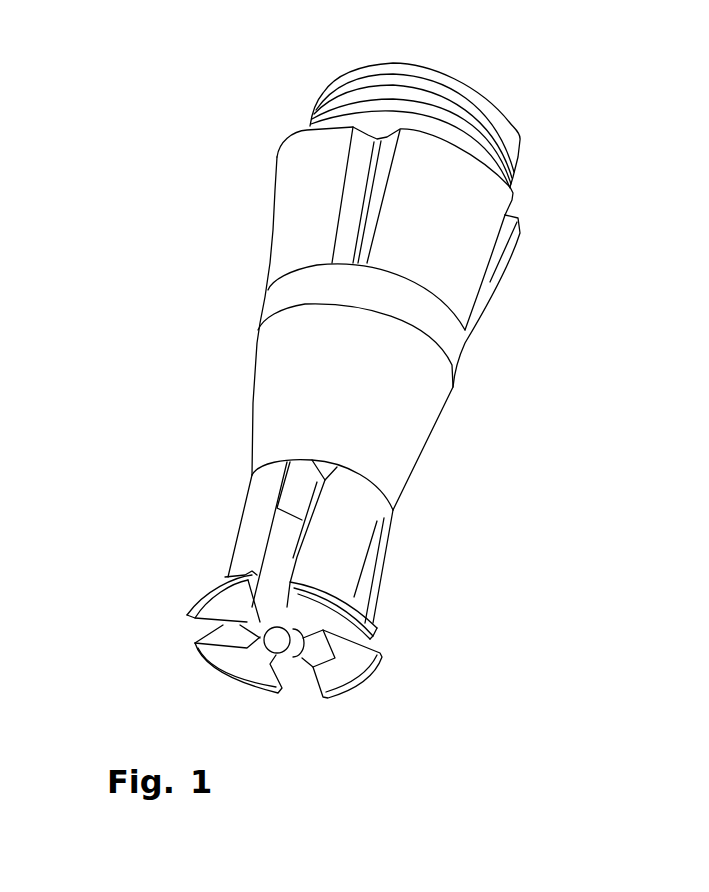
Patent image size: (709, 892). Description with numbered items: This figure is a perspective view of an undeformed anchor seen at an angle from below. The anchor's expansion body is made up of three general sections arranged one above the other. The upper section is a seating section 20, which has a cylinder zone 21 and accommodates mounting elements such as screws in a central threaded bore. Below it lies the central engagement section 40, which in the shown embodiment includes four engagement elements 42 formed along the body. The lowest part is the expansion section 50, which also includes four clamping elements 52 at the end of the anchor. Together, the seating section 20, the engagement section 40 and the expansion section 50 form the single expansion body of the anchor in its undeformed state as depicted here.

The seating section 20 is at (528, 143).
The cylinder zone 21 is at (497, 111).
The engagement section 40 is at (497, 293).
The engagement elements 42 is at (453, 202).
The expansion section 50 is at (388, 571).
The clamping elements 52 is at (347, 529).